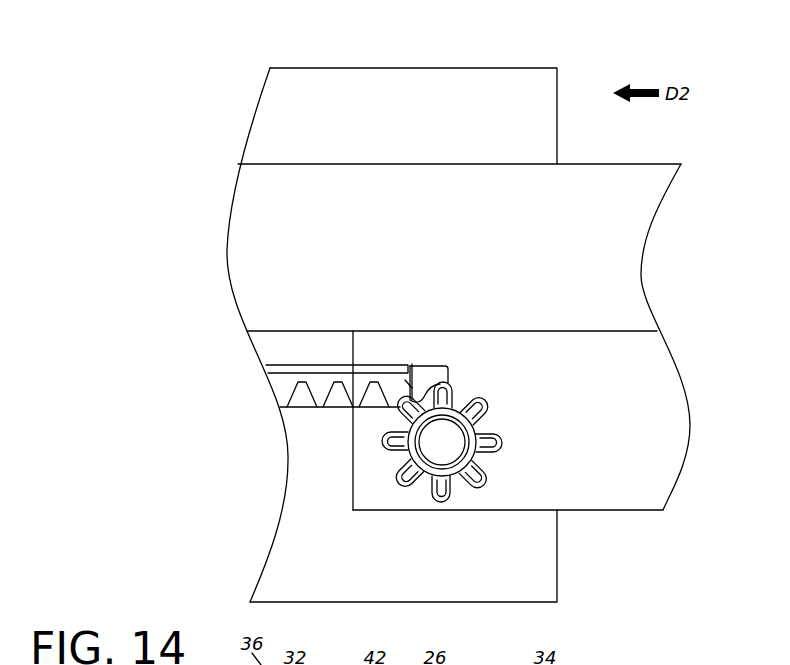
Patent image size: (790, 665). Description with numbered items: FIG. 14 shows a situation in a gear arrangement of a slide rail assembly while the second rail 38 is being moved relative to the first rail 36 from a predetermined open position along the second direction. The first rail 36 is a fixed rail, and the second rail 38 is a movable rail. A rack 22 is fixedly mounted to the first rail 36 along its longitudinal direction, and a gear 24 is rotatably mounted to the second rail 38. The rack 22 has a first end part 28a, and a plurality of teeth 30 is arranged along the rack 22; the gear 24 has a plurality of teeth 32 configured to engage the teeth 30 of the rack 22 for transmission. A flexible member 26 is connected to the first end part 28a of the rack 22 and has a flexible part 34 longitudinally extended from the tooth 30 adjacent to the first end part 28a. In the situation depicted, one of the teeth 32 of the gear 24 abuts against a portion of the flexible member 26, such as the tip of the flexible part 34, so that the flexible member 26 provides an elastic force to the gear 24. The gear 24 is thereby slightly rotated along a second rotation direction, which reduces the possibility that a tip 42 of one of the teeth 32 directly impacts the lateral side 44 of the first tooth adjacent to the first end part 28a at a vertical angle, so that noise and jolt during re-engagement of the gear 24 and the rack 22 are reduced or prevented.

The rack 22 is at (282, 369).
The gear 24 is at (397, 479).
The flexible member 26 is at (425, 378).
The first end part 28a is at (401, 401).
The teeth 30 is at (283, 391).
The teeth 32 is at (446, 389).
The flexible part 34 is at (437, 383).
The first rail 36 is at (269, 66).
The second rail 38 is at (655, 221).
The tip 42 is at (400, 372).
The lateral side 44 is at (410, 378).